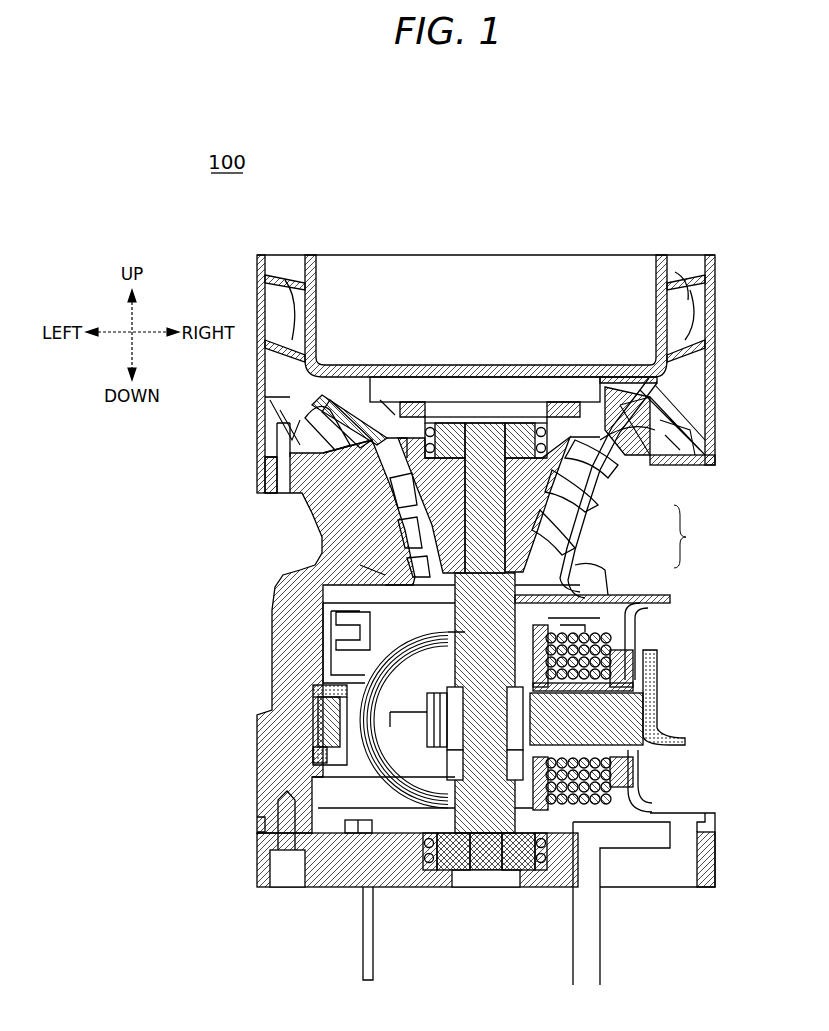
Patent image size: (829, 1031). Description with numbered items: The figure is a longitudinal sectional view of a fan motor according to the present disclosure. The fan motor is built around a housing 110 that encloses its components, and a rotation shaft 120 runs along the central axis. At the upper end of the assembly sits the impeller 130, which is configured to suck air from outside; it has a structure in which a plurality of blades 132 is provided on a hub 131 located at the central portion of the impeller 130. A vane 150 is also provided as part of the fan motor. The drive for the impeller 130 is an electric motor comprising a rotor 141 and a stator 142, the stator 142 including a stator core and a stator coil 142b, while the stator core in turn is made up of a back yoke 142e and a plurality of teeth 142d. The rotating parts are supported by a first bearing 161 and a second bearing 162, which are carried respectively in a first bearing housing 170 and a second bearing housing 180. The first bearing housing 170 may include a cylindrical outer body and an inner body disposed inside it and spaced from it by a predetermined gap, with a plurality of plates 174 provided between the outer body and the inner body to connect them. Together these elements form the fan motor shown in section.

The housing 110 is at (318, 517).
The rotation shaft 120 is at (515, 612).
The impeller 130 is at (510, 488).
The hub 131 is at (545, 520).
The blades 132 is at (580, 494).
The rotor 141 is at (513, 721).
The stator 142 is at (475, 725).
The stator coil 142b is at (618, 772).
The teeth 142d is at (628, 707).
The back yoke 142e is at (320, 710).
The vane 150 is at (312, 256).
The first bearing 161 is at (456, 418).
The second bearing 162 is at (513, 870).
The first bearing housing 170 is at (620, 395).
The plates 174 is at (665, 420).
The second bearing housing 180 is at (403, 870).